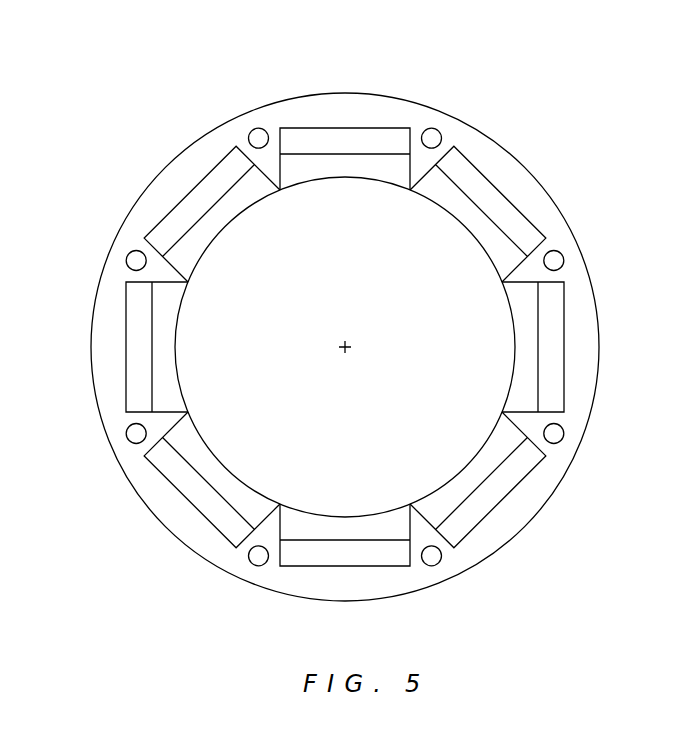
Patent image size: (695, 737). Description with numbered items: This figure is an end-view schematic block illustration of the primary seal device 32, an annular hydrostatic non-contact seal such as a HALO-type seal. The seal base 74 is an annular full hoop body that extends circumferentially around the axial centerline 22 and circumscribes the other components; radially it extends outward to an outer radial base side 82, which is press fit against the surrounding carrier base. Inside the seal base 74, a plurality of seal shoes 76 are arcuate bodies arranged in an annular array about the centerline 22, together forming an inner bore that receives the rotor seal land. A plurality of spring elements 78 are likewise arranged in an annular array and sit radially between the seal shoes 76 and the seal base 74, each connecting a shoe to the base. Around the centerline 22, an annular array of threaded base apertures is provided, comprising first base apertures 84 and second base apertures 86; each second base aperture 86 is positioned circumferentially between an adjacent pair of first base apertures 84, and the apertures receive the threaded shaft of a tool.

The axial centerline 22 is at (352, 353).
The primary seal device 32 is at (571, 105).
The seal base 74 is at (388, 308).
The seal shoes 76 is at (335, 168).
The spring elements 78 is at (343, 140).
The outer radial base side 82 is at (288, 96).
The first base apertures 84 is at (253, 131).
The second base apertures 86 is at (437, 131).